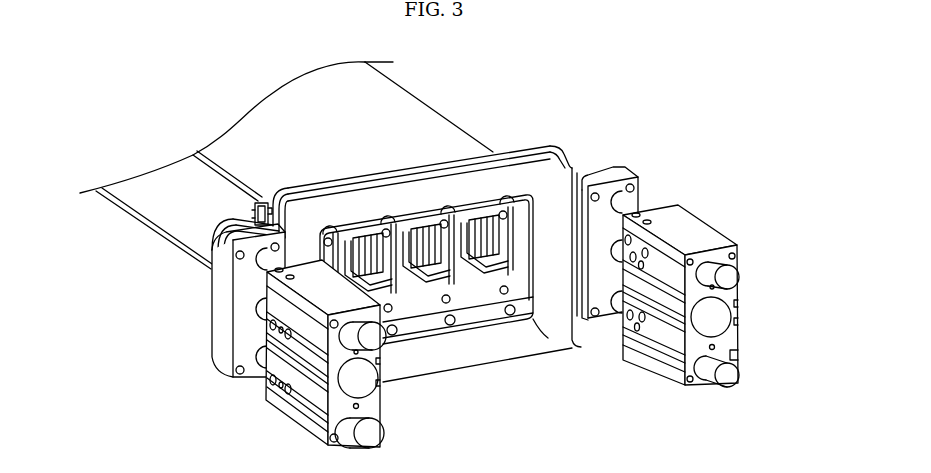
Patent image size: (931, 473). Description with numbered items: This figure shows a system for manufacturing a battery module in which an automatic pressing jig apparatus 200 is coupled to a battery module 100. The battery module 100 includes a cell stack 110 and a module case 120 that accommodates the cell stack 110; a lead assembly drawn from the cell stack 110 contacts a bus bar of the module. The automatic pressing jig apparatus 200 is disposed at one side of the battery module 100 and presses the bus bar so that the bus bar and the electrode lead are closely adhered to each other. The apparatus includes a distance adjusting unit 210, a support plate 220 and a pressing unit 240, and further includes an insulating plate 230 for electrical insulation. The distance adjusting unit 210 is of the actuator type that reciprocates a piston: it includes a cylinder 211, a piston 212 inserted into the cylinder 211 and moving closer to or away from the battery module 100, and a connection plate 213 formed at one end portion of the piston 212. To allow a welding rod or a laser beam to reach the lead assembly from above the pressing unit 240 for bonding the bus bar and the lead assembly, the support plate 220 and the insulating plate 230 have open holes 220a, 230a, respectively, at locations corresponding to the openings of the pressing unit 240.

The battery module 100 is at (450, 93).
The cell stack 110 is at (205, 256).
The module case 120 is at (220, 153).
The automatic pressing jig apparatus 200 is at (597, 130).
The distance adjusting unit 210 is at (686, 289).
The cylinder 211 is at (700, 230).
The piston 212 is at (737, 283).
The connection plate 213 is at (638, 178).
The support plate 220 is at (518, 348).
The open hole 220a is at (410, 331).
The insulating plate 230 is at (468, 318).
The open hole 230a is at (525, 232).
The pressing unit 240 is at (533, 318).